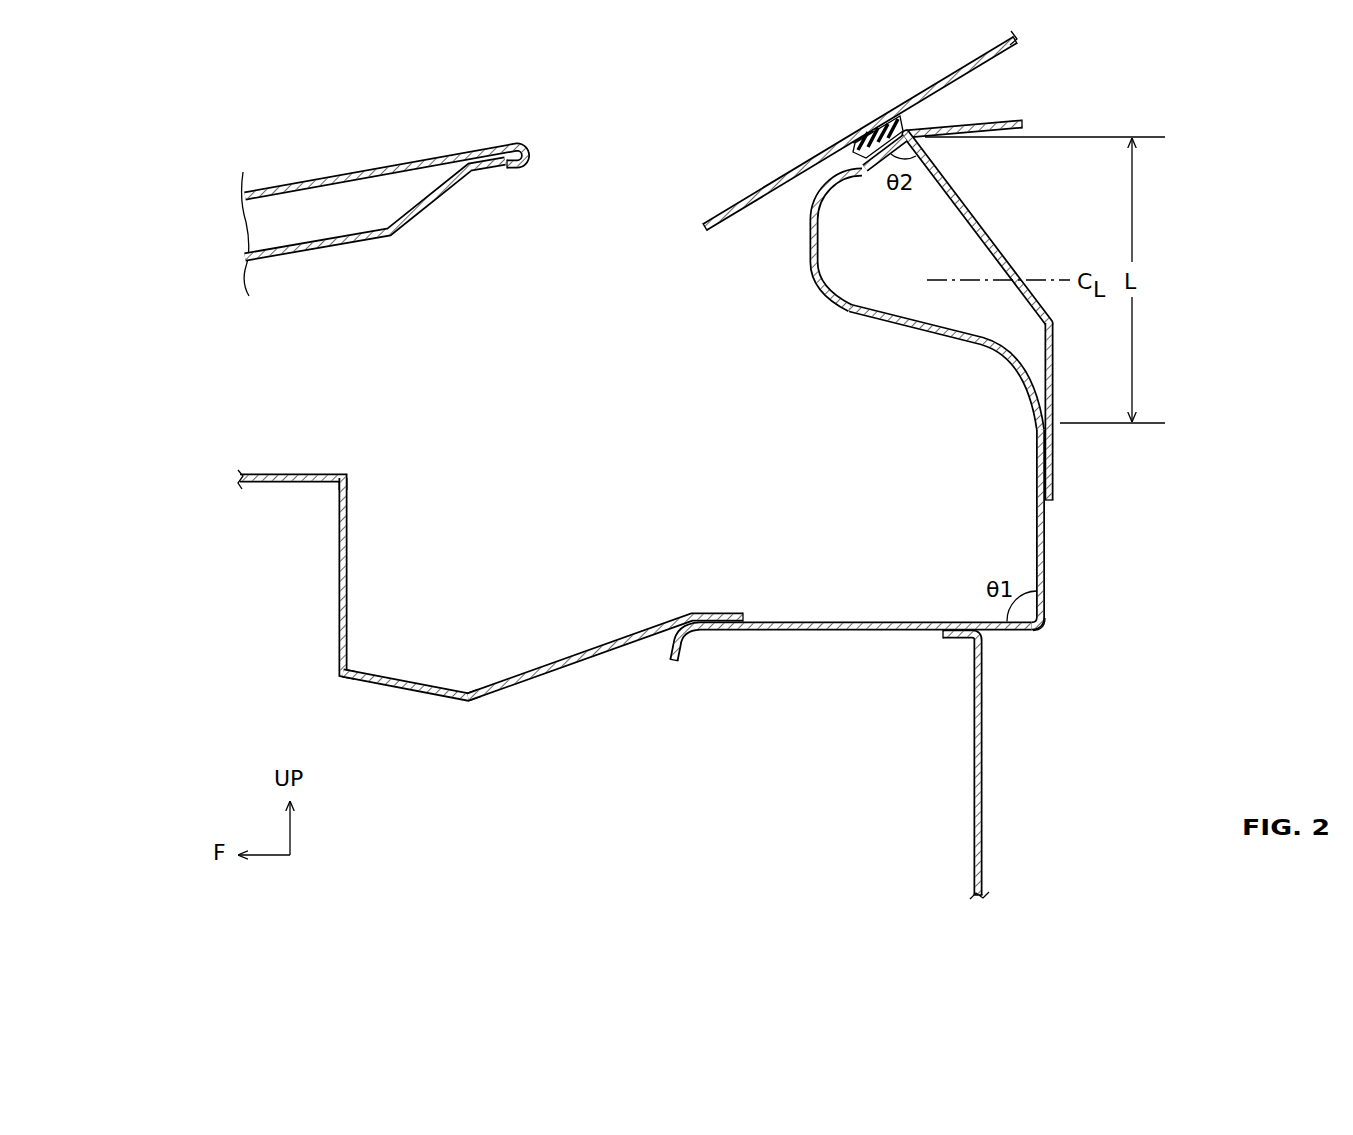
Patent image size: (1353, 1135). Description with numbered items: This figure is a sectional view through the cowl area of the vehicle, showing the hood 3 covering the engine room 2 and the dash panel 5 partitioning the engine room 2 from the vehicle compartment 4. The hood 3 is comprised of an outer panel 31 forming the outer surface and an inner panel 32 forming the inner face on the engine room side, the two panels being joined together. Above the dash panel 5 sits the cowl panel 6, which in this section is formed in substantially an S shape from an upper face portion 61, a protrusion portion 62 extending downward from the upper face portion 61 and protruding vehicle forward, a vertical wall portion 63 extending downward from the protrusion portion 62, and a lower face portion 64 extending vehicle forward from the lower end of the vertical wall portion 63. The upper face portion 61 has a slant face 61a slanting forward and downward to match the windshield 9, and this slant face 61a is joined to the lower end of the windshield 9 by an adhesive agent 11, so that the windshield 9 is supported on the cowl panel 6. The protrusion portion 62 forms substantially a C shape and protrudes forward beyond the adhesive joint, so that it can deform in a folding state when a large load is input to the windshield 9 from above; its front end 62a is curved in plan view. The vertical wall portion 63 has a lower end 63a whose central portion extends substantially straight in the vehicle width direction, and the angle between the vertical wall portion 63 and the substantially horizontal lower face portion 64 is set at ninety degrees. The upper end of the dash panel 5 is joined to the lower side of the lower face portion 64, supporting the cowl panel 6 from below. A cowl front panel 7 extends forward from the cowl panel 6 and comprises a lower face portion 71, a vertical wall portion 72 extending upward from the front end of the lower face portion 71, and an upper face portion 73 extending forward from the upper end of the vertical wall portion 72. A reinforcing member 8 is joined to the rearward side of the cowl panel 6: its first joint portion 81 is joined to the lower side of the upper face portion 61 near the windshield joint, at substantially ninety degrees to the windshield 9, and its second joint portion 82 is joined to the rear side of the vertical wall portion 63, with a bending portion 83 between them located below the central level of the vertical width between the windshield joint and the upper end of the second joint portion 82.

The engine room 2 is at (816, 746).
The hood 3 is at (387, 205).
The outer panel 31 is at (388, 168).
The inner panel 32 is at (403, 228).
The vehicle compartment 4 is at (1076, 742).
The dash panel 5 is at (984, 770).
The cowl panel 6 is at (933, 430).
The upper face portion 61 is at (985, 119).
The slant face 61a is at (887, 113).
The protrusion portion 62 is at (832, 300).
The front end 62a is at (810, 255).
The vertical wall portion 63 is at (1034, 535).
The lower end 63a is at (1045, 623).
The lower face portion 64 is at (822, 621).
The cowl front panel 7 is at (490, 562).
The lower face portion 71 is at (578, 654).
The vertical wall portion 72 is at (348, 568).
The upper face portion 73 is at (292, 474).
The reinforcing member 8 is at (976, 317).
The first joint portion 81 is at (882, 165).
The second joint portion 82 is at (1055, 450).
The bending portion 83 is at (1055, 325).
The windshield 9 is at (758, 191).
The adhesive agent 11 is at (863, 130).